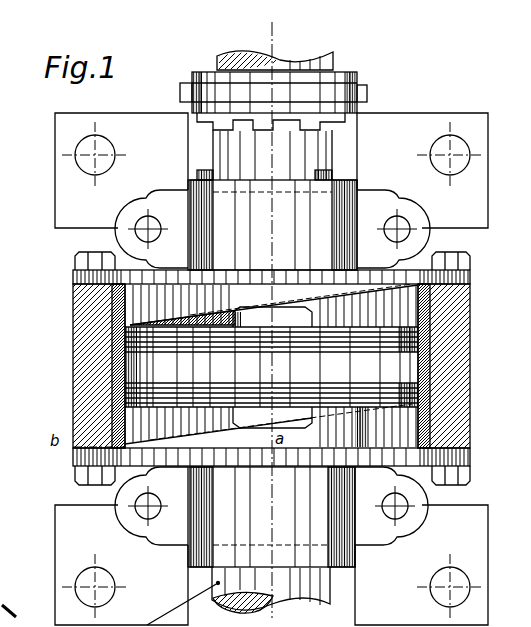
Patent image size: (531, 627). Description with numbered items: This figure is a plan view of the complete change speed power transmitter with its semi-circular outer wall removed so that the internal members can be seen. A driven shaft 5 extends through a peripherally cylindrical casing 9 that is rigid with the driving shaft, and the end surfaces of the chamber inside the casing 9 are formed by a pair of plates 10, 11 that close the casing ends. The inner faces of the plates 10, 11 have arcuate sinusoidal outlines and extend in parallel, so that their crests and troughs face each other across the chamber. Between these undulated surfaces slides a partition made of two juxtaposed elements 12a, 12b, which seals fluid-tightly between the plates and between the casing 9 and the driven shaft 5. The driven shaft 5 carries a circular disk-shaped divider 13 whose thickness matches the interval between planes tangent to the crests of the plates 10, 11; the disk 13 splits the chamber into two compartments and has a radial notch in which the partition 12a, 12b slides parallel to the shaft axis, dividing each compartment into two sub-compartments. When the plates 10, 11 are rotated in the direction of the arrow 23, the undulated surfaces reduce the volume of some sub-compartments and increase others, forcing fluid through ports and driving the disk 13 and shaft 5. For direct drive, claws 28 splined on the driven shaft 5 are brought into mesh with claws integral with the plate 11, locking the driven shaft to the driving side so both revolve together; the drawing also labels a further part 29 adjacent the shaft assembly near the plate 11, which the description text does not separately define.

The claws 28 is at (366, 87).
The driven shaft 5 is at (336, 174).
The bearing housing 29 is at (360, 178).
The plate 11 is at (407, 278).
The plate 10 is at (468, 455).
The casing 9 is at (447, 363).
The disk-shaped divider 13 is at (127, 368).
The partition element 12a is at (297, 413).
The partition element 12b is at (250, 418).
The arrow 23 is at (312, 588).